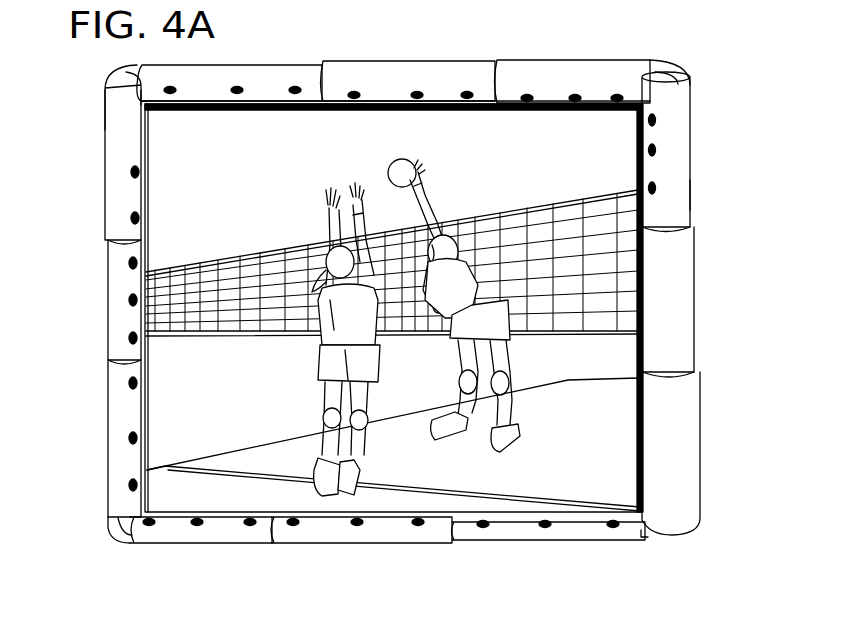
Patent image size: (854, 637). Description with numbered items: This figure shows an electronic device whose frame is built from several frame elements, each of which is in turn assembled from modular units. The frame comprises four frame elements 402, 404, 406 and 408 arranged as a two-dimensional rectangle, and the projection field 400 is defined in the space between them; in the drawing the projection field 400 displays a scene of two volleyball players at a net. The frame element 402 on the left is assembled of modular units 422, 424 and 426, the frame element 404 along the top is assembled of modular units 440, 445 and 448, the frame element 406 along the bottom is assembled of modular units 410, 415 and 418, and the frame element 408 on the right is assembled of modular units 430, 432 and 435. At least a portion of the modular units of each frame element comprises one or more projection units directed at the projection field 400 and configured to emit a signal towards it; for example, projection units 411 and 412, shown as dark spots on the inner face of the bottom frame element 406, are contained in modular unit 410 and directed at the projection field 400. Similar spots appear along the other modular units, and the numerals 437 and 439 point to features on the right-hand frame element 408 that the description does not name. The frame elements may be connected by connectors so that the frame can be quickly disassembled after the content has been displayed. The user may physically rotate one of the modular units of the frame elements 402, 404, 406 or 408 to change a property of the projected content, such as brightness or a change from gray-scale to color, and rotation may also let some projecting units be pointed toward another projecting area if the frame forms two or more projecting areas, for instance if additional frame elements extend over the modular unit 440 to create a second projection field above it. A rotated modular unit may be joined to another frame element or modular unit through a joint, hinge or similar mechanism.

The projection field 400 is at (570, 397).
The frame element 402 is at (73, 303).
The frame element 404 is at (393, 51).
The frame element 406 is at (385, 570).
The frame element 408 is at (734, 304).
The modular unit 410 is at (198, 549).
The projection unit 411 is at (144, 551).
The projection unit 412 is at (252, 526).
The modular unit 415 is at (415, 540).
The modular unit 418 is at (572, 540).
The modular unit 422 is at (108, 468).
The modular unit 424 is at (108, 318).
The modular unit 426 is at (106, 188).
The modular unit 430 is at (652, 150).
The modular unit 432 is at (694, 298).
The modular unit 435 is at (690, 195).
The aperture 437 is at (652, 188).
The aperture 439 is at (652, 120).
The modular unit 440 is at (562, 73).
The modular unit 445 is at (404, 73).
The modular unit 448 is at (288, 72).